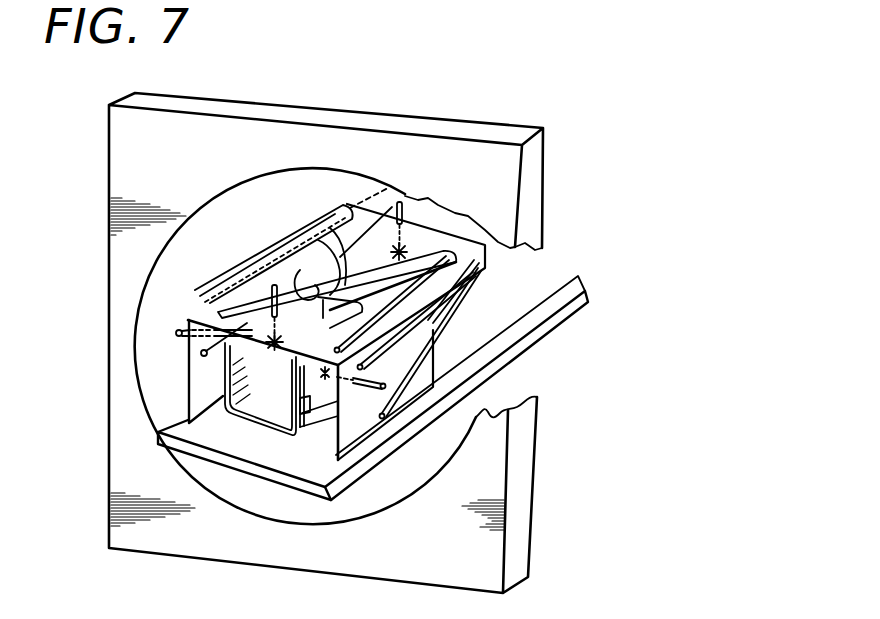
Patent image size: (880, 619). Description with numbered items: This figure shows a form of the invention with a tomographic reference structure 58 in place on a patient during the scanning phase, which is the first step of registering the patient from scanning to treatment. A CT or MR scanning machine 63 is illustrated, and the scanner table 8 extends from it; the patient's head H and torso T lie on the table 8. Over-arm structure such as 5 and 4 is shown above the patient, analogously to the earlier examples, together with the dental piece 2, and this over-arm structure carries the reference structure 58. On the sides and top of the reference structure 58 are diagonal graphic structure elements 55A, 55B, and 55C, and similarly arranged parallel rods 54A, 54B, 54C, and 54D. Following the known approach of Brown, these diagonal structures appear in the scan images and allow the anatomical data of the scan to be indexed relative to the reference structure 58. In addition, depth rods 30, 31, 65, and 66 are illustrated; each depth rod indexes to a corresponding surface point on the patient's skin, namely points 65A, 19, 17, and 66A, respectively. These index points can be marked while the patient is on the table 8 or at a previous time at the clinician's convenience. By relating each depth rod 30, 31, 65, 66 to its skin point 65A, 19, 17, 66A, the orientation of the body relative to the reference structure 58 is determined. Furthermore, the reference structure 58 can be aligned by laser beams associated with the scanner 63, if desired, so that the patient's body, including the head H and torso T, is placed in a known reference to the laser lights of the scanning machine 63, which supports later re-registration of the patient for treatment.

The dental piece 2 is at (328, 330).
The over-arm structure 4 is at (228, 335).
The over-arm structure 5 is at (192, 390).
The scanner table 8 is at (565, 308).
The surface point on the patient's skin 17 is at (168, 442).
The surface point on the patient's skin 19 is at (422, 258).
The depth rod 30 is at (258, 303).
The depth rod 31 is at (420, 203).
The parallel rod 54A is at (455, 312).
The parallel rod 54B is at (440, 262).
The parallel rod 54C is at (352, 214).
The parallel rod 54D is at (300, 292).
The diagonal graphic structure element 55A is at (433, 360).
The diagonal graphic structure element 55B is at (416, 250).
The diagonal graphic structure element 55C is at (280, 282).
The reference structure 58 is at (222, 290).
The CT or MR scanning machine 63 is at (520, 548).
The depth rod 65 is at (378, 390).
The surface point on the patient's skin 65A is at (326, 371).
The depth rod 66 is at (183, 331).
The surface point on the patient's skin 66A is at (196, 362).
The patient's head H is at (268, 403).
The patient's torso T is at (463, 330).